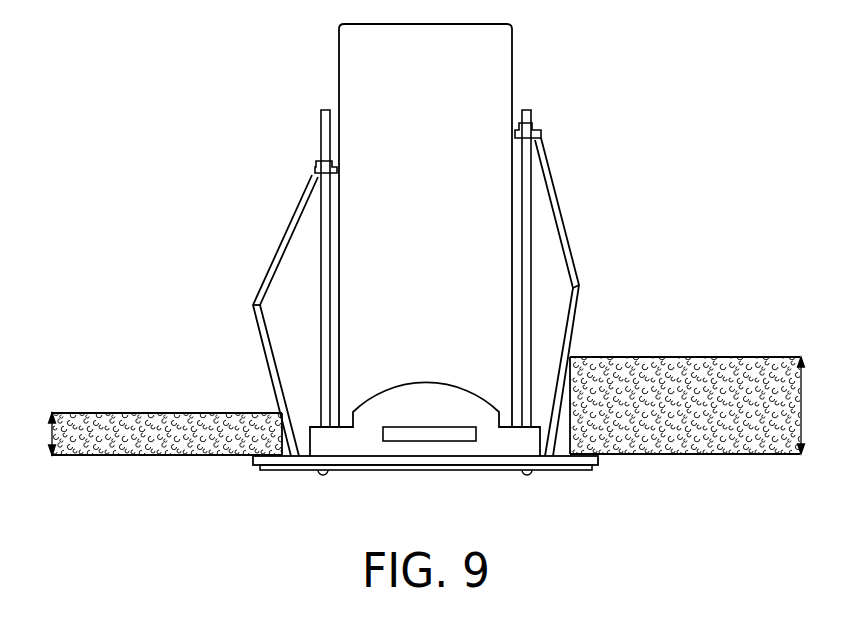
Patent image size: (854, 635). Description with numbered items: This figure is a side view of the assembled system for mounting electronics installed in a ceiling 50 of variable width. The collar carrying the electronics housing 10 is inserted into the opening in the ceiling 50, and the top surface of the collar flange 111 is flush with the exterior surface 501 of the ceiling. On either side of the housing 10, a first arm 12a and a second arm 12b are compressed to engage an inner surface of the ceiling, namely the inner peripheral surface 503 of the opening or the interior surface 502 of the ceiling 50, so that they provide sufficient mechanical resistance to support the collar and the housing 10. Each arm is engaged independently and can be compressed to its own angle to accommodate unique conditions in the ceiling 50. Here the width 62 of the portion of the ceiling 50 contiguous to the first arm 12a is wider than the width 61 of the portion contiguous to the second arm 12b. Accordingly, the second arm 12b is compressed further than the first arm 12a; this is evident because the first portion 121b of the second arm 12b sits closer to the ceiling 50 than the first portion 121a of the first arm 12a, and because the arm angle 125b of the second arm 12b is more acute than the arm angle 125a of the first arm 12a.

The housing 10 is at (509, 35).
The first arm 12a is at (562, 207).
The second arm 12b is at (280, 247).
The first portion of the first arm 121a is at (542, 131).
The first portion of the second arm 121b is at (314, 161).
The arm angle of the first arm 125a is at (563, 291).
The arm angle of the second arm 125b is at (277, 304).
The ceiling 50 is at (706, 333).
The exterior surface of the ceiling 501 is at (167, 456).
The interior surface of the ceiling 502 is at (138, 413).
The inner peripheral surface of the opening 503 is at (284, 428).
The width of the ceiling portion contiguous to the second arm 61 is at (41, 434).
The width of the ceiling portion contiguous to the first arm 62 is at (810, 405).
The collar flange 111 is at (598, 469).